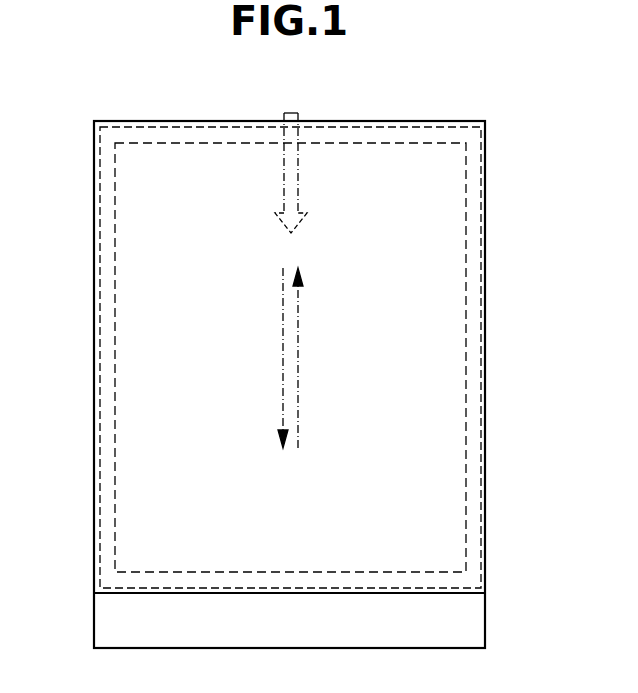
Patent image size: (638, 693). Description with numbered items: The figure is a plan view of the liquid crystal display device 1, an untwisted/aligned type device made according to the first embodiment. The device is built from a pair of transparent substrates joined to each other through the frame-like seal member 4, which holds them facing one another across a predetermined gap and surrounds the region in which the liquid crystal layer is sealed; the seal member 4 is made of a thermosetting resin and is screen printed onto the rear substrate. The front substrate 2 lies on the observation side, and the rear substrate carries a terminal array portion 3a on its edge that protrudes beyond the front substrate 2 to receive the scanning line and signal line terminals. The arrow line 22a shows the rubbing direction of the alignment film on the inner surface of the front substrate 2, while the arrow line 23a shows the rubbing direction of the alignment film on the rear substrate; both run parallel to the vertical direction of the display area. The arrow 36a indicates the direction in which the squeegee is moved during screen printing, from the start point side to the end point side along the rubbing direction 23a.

The liquid crystal display device 1 is at (489, 179).
The front substrate 2 is at (427, 160).
The terminal array portion 3a is at (468, 620).
The seal member 4 is at (104, 256).
The arrow line 22a is at (298, 355).
The arrow line 23a is at (283, 352).
The arrow 36a is at (298, 195).